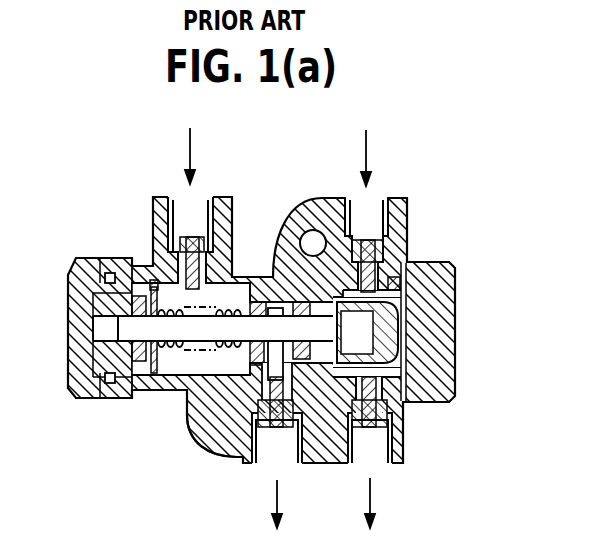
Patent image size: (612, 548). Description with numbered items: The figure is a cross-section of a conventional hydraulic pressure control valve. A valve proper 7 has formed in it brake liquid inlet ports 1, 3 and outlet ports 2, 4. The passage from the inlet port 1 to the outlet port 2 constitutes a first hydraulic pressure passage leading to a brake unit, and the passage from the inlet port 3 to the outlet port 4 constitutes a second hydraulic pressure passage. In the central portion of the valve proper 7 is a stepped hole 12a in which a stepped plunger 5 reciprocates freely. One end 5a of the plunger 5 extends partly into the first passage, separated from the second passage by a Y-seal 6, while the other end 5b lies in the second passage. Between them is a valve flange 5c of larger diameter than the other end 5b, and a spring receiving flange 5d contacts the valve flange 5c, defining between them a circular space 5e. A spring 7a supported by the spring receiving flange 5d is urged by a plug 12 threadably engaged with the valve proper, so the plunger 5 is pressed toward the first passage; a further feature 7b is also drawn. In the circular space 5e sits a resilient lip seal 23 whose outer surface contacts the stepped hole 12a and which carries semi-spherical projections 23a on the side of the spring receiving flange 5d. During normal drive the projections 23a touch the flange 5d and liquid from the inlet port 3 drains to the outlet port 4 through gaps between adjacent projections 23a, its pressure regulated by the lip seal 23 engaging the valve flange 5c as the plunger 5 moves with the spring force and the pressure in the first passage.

The inlet port 1 is at (373, 213).
The outlet port 2 is at (376, 450).
The inlet port 3 is at (197, 206).
The outlet port 4 is at (275, 450).
The stepped plunger 5 is at (203, 343).
The one end of the plunger 5a is at (396, 352).
The other end of the plunger 5b is at (150, 328).
The valve flange 5c is at (292, 300).
The spring receiving flange 5d is at (250, 300).
The circular space 5e is at (263, 360).
The Y-seal 6 is at (308, 377).
The valve proper 7 is at (200, 424).
The spring 7a is at (140, 394).
The sleeve shoulder 7b is at (150, 268).
The plug 12 is at (92, 296).
The stepped hole 12a is at (106, 300).
The lip seal 23 is at (238, 415).
The semi-spherical projections 23a is at (262, 292).